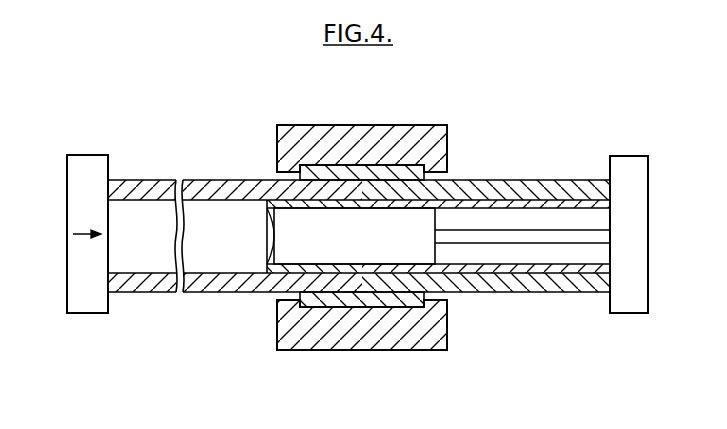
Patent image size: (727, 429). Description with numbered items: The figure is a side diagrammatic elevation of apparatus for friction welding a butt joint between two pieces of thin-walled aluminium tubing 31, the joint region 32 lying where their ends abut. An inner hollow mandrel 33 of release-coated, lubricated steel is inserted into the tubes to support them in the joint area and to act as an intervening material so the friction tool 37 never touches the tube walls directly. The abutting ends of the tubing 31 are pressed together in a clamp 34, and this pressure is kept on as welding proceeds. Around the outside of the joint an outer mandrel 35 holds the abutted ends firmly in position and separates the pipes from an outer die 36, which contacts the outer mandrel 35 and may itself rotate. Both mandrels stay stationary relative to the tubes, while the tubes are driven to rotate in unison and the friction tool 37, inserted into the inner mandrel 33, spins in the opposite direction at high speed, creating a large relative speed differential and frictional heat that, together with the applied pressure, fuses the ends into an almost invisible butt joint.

The aluminium tubing 31 is at (541, 190).
The sleeve 32 is at (362, 200).
The inner hollow mandrel 33 is at (477, 203).
The clamp 34 is at (75, 197).
The outer mandrel 35 is at (316, 171).
The outer die 36 is at (431, 143).
The friction tool 37 is at (268, 229).